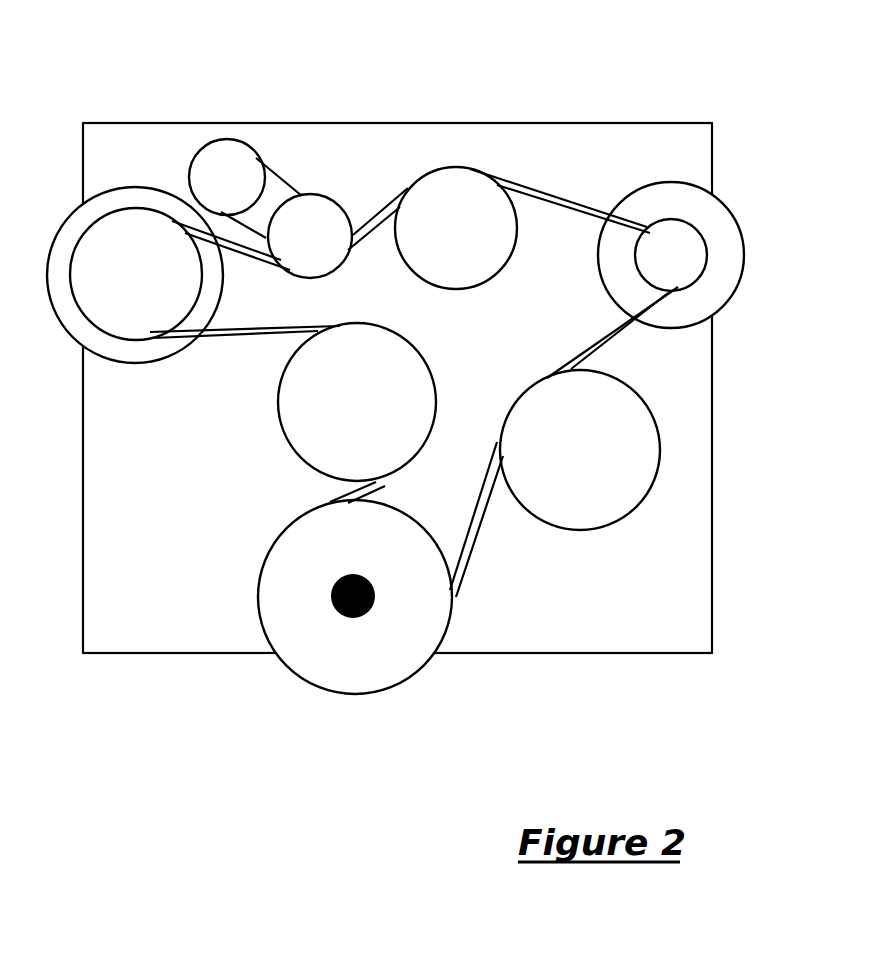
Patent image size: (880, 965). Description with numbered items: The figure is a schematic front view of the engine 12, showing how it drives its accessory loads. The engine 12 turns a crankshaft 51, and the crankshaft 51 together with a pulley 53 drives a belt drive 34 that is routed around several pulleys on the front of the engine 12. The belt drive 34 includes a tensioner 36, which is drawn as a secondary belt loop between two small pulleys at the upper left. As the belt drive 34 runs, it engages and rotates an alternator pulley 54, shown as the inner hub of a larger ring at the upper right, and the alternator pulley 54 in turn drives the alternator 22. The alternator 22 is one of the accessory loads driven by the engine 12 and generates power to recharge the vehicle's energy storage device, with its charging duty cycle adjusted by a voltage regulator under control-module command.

The engine 12 is at (543, 122).
The alternator 22 is at (734, 300).
The alternator pulley 54 is at (700, 231).
The pulley 53 is at (412, 678).
The crankshaft 51 is at (338, 617).
The belt drive 34 is at (473, 547).
The tensioner 36 is at (283, 180).